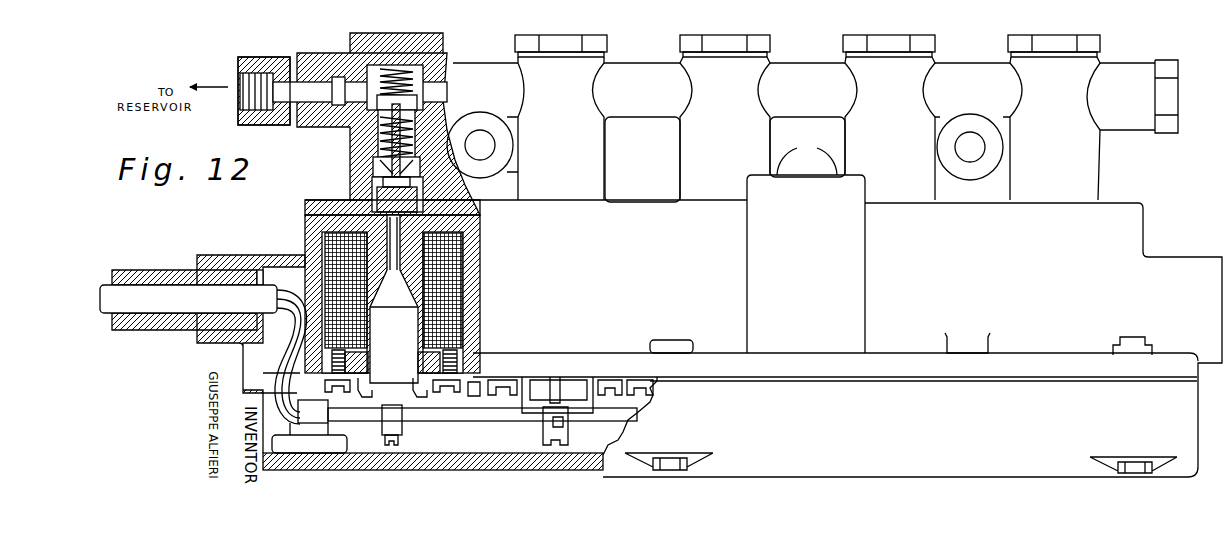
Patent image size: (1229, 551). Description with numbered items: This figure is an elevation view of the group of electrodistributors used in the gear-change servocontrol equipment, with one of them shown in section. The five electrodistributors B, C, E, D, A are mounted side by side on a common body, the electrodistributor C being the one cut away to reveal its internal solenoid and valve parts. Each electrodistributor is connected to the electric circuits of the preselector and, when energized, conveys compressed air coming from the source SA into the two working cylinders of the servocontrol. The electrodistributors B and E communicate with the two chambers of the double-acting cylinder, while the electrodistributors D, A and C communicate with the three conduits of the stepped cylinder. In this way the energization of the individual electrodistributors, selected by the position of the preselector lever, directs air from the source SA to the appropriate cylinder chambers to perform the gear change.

The electrodistributor C is at (446, 55).
The electrodistributor B is at (571, 160).
The electrodistributor E is at (733, 160).
The electrodistributor A is at (899, 160).
The electrodistributor D is at (1063, 160).
The source of compressed air SA is at (249, 91).